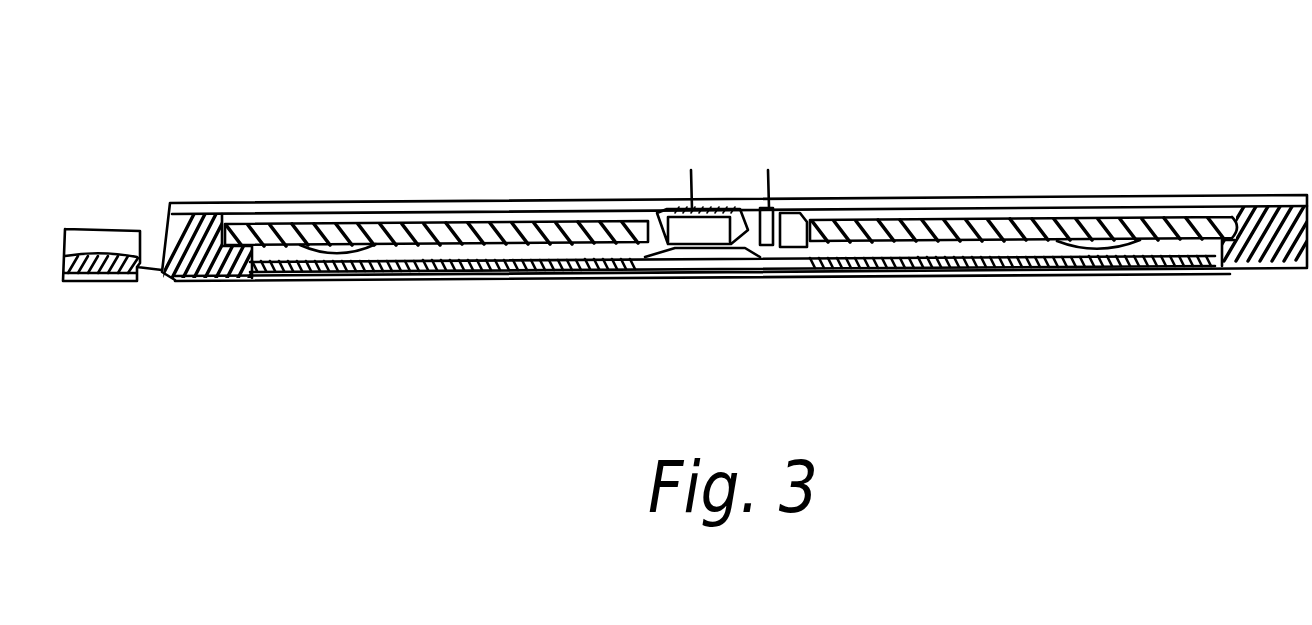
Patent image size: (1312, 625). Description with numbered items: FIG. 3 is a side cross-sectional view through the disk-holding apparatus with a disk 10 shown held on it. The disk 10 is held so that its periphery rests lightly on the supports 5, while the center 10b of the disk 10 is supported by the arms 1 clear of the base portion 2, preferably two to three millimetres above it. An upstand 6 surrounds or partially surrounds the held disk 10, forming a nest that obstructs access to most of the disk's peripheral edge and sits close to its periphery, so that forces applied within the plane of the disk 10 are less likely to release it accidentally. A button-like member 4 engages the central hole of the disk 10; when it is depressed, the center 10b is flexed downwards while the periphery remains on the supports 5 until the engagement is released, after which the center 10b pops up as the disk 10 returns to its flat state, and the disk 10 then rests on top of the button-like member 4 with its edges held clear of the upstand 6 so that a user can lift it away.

The arms 1 is at (795, 328).
The base portion 2 is at (933, 272).
The button-like member 4 is at (768, 170).
The supports 5 is at (1180, 317).
The upstand 6 is at (1260, 205).
The disk 10 is at (268, 230).
The center of the disk 10b is at (872, 225).